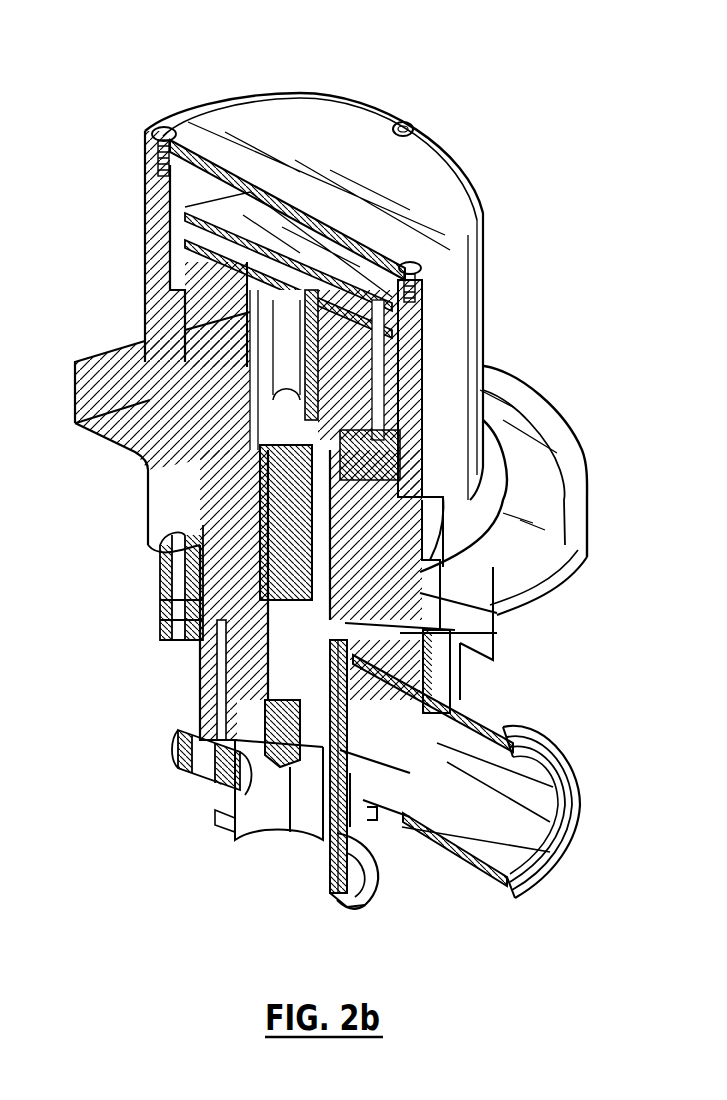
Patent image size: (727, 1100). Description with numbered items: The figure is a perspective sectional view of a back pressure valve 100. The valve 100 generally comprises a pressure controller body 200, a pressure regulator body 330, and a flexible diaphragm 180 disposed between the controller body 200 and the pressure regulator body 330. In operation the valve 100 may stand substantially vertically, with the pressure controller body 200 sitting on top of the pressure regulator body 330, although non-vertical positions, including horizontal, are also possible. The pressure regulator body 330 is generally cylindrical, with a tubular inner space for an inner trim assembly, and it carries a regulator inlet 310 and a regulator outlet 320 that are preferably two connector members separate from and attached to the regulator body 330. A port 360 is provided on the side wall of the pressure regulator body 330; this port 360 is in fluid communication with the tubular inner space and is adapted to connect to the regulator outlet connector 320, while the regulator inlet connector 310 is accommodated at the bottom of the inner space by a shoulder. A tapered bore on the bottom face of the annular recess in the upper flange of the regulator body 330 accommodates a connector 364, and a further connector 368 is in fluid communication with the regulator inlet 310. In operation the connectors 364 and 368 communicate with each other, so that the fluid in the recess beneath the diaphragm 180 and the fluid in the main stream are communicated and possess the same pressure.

The back pressure valve 100 is at (412, 78).
The pressure controller body 200 is at (487, 297).
The flexible diaphragm 180 is at (490, 615).
The connector 364 is at (165, 598).
The pressure regulator body 330 is at (452, 670).
The regulator outlet 320 is at (537, 790).
The port 360 is at (407, 747).
The regulator inlet 310 is at (263, 817).
The connector 368 is at (187, 772).